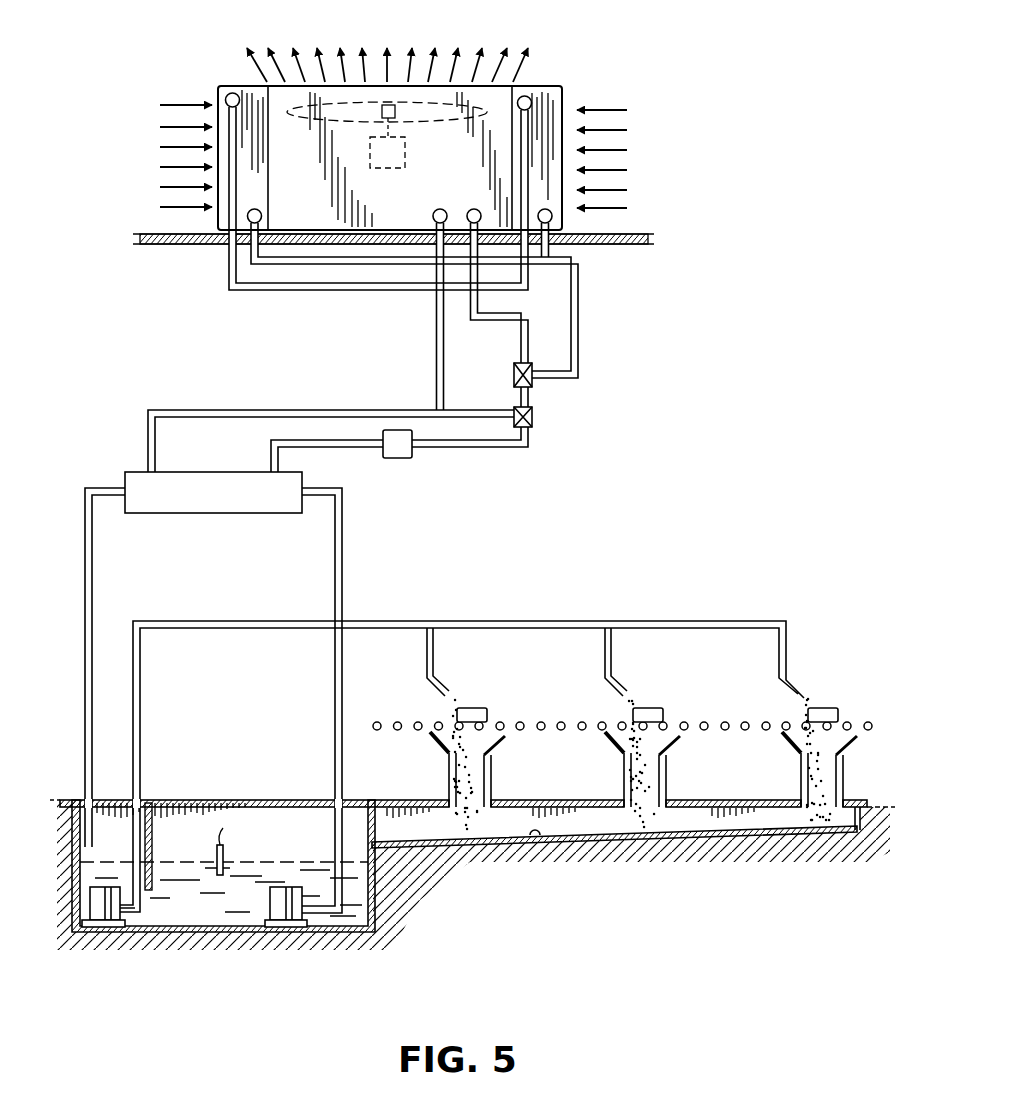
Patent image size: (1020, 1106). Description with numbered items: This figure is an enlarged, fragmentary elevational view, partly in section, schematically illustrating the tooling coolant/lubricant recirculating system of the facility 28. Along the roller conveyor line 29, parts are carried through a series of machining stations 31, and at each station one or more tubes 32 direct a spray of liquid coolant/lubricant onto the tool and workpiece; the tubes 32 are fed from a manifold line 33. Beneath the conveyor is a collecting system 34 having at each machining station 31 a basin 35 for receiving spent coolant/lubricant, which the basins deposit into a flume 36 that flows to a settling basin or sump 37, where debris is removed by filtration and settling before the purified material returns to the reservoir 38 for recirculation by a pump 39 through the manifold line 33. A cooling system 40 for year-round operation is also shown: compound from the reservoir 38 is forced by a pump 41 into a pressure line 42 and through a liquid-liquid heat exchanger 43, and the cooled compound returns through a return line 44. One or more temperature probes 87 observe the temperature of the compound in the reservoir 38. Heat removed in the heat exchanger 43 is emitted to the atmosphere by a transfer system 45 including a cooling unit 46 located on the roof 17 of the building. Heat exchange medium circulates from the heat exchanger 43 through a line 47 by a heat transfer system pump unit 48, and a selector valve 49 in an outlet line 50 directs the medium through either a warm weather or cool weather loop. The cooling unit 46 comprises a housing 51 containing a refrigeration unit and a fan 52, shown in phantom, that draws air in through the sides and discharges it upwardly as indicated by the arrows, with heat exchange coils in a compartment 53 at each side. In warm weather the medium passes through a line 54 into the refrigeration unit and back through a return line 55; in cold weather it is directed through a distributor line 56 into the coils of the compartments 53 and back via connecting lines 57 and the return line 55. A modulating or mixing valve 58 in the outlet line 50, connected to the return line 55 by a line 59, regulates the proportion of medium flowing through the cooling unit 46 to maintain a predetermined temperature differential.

The roof 17 is at (630, 238).
The facility 28 is at (607, 590).
The roller conveyor line 29 is at (398, 712).
The machining station 31 is at (503, 707).
The tube 32 is at (437, 685).
The manifold line 33 is at (240, 630).
The collecting system 34 is at (428, 788).
The basin 35 is at (617, 752).
The flume 36 is at (540, 843).
The settling basin or sump 37 is at (375, 930).
The reservoir 38 is at (213, 911).
The pump 39 is at (102, 914).
The system 40 is at (118, 427).
The pump 41 is at (287, 914).
The pressure line 42 is at (343, 563).
The liquid-liquid heat exchanger 43 is at (198, 514).
The return line 44 is at (85, 620).
The transfer system 45 is at (592, 322).
The cooling unit 46 is at (583, 67).
The line 47 is at (268, 456).
The heat transfer system pump unit 48 is at (400, 458).
The selector valve 49 is at (533, 383).
The outlet line 50 is at (530, 443).
The housing 51 is at (277, 118).
The fan 52 is at (405, 163).
The compartment 53 is at (553, 100).
The line 54 is at (520, 337).
The return line 55 is at (436, 360).
The distributor line 56 is at (578, 276).
The connecting line 57 is at (295, 291).
The modulating or mixing valve 58 is at (533, 420).
The line 59 is at (480, 409).
The temperature probe 87 is at (223, 852).